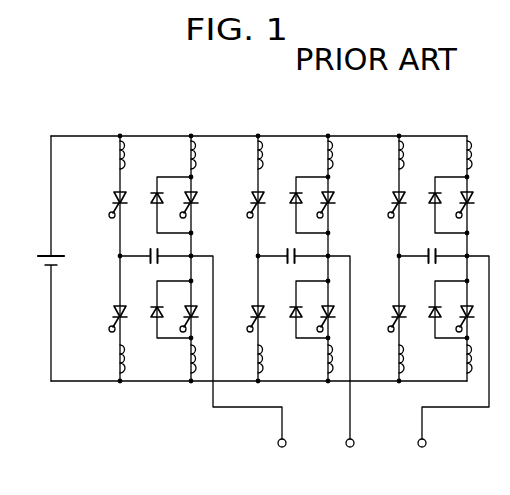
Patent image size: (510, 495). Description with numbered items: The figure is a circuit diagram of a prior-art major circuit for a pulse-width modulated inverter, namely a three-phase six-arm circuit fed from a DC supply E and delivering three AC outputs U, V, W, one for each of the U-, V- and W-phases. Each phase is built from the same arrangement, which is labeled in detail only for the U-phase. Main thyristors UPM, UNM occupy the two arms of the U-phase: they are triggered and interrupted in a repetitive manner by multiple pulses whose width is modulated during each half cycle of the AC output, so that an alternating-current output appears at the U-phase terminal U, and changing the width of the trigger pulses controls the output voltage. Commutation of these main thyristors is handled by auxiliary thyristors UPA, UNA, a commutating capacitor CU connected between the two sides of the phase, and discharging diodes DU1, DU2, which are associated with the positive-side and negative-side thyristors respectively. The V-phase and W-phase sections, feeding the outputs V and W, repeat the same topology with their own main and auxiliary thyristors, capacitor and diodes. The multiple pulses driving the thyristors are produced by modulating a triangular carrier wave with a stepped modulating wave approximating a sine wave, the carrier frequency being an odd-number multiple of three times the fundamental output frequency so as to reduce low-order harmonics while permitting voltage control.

The DC supply E is at (41, 258).
The auxiliary thyristor UPA is at (112, 199).
The auxiliary thyristor UNA is at (112, 313).
The main thyristor UPM is at (212, 202).
The main thyristor UNM is at (199, 314).
The discharging diode DU1 is at (148, 198).
The discharging diode DU2 is at (149, 305).
The commutating capacitor CU is at (155, 249).
The U-phase AC output U is at (240, 366).
The V-phase AC output V is at (343, 366).
The W-phase AC output W is at (450, 366).